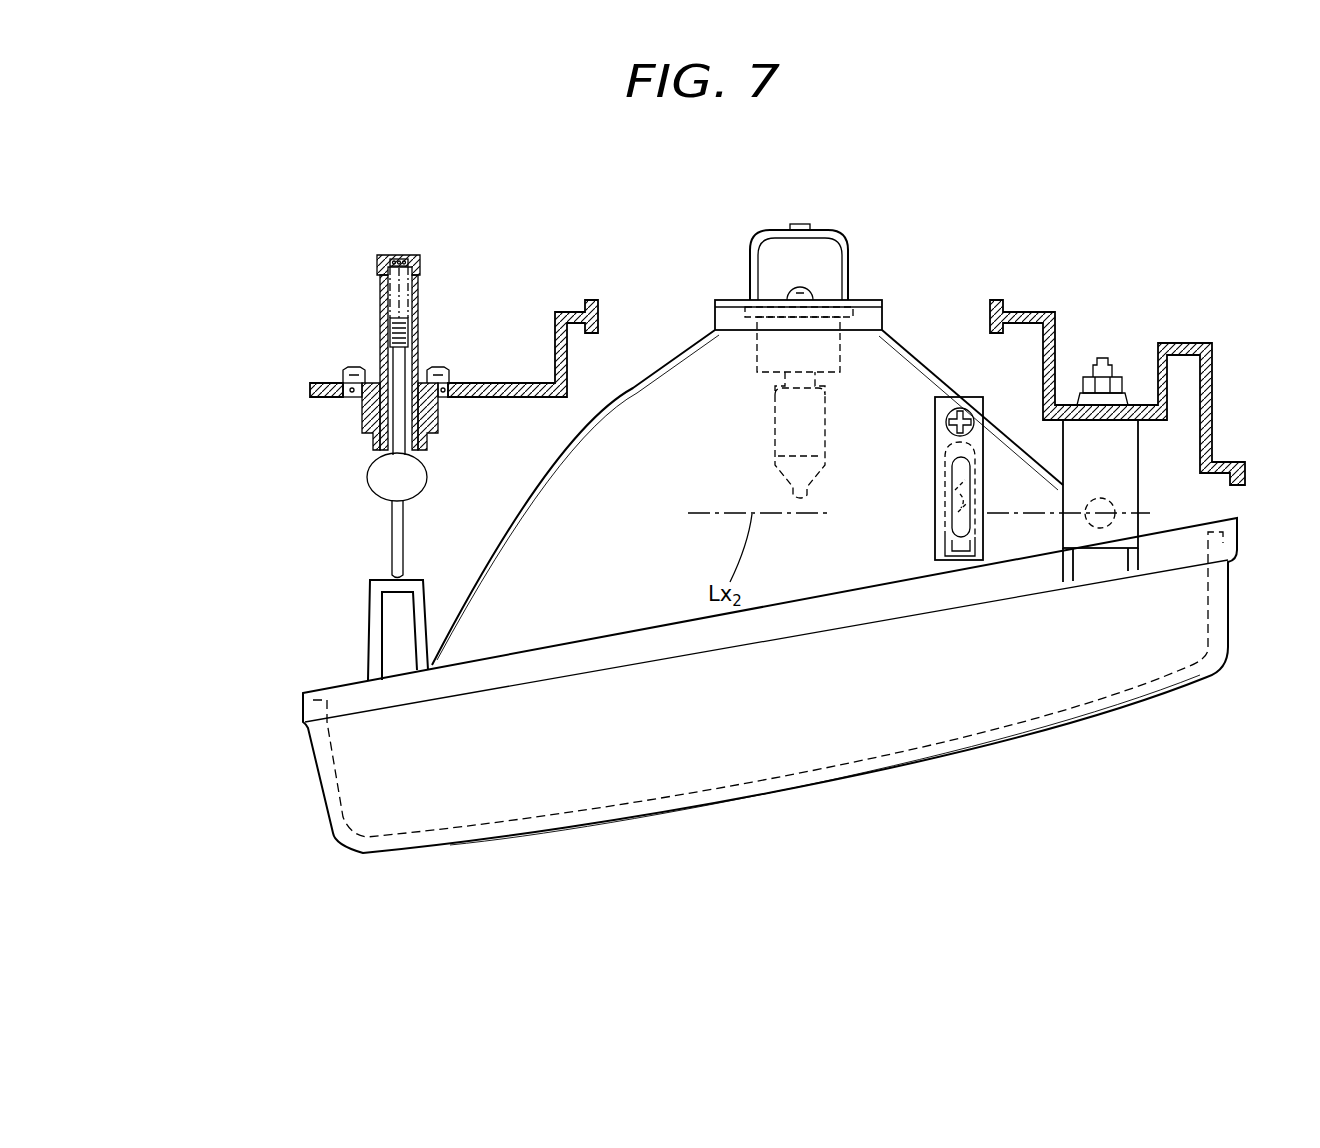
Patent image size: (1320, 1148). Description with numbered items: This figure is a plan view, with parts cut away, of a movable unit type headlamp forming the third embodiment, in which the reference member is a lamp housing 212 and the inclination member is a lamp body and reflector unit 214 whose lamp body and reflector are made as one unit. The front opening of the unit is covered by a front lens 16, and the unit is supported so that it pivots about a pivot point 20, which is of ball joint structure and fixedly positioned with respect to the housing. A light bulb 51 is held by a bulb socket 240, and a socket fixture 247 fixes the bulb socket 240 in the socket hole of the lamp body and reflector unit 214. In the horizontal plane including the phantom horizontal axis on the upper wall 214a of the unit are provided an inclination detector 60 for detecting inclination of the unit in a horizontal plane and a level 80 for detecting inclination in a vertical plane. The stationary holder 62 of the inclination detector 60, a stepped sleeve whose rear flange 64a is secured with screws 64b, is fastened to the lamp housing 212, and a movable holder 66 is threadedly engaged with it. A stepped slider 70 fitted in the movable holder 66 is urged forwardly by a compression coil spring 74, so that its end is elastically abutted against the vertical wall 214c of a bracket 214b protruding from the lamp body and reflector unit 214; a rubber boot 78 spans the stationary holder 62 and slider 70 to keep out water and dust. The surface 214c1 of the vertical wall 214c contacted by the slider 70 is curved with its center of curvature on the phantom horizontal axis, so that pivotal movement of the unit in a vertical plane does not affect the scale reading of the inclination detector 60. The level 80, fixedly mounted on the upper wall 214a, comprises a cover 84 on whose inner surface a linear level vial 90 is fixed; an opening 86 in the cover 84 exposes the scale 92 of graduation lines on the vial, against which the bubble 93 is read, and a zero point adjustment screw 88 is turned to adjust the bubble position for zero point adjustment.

The front lens 16 is at (851, 782).
The pivot point 20 is at (1117, 497).
The light bulb 51 is at (772, 432).
The inclination detector 60 is at (372, 416).
The stationary holder 62 is at (362, 428).
The flange 64a is at (341, 386).
The screws 64b is at (350, 370).
The movable holder 66 is at (380, 284).
The slider 70 is at (392, 545).
The compression coil spring 74 is at (410, 281).
The rubber boot 78 is at (370, 488).
The level 80 is at (1023, 447).
The cover 84 is at (983, 476).
The opening 86 is at (955, 520).
The zero point adjustment screw 88 is at (947, 417).
The level vial 90 is at (936, 447).
The scale 92 is at (950, 499).
The bubble 93 is at (930, 537).
The lamp housing 212 is at (1033, 302).
The lamp body and reflector unit 214 is at (667, 355).
The upper wall 214a is at (908, 347).
The bracket 214b is at (293, 625).
The vertical wall 214c is at (293, 625).
The curved surface 214c1 is at (375, 580).
The bulb socket 240 is at (822, 220).
The socket fixture 247 is at (862, 300).